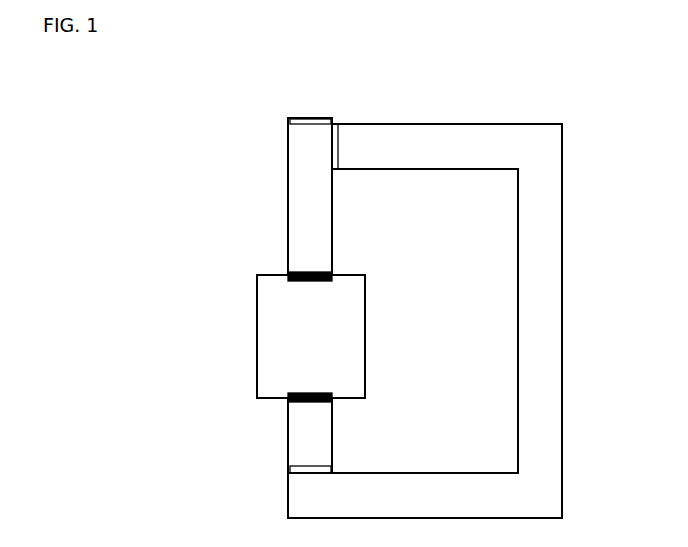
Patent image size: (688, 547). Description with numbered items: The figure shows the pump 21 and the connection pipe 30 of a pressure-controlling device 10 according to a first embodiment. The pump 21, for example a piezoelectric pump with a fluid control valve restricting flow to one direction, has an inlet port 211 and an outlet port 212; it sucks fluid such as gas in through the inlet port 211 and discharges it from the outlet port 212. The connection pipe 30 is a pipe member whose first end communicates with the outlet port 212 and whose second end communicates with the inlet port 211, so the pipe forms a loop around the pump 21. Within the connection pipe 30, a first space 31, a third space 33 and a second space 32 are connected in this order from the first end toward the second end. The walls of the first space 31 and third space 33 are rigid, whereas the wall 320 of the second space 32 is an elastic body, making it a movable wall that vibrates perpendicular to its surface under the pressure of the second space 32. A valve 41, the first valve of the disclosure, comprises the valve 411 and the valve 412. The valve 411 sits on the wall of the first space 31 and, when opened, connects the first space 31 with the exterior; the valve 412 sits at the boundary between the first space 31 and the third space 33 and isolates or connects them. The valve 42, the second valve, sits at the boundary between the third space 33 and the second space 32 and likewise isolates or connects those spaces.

The pressure-controlling device 10 is at (588, 88).
The connection pipe 30 is at (552, 273).
The third space 33 is at (552, 203).
The first space 31 is at (297, 195).
The second space 32 is at (297, 435).
The wall 320 is at (288, 413).
The pump 21 is at (263, 333).
The inlet port 211 is at (291, 388).
The outlet port 212 is at (292, 286).
The valve 41 is at (380, 77).
The valve 411 is at (320, 120).
The valve 412 is at (338, 127).
The valve 42 is at (296, 469).